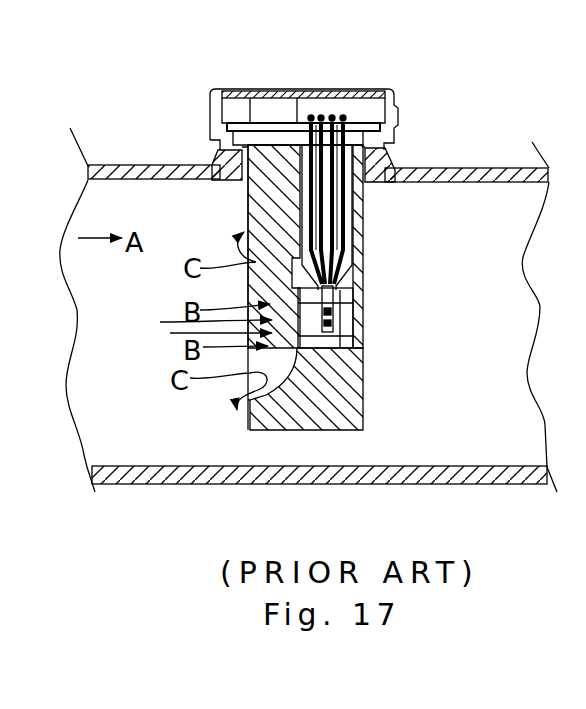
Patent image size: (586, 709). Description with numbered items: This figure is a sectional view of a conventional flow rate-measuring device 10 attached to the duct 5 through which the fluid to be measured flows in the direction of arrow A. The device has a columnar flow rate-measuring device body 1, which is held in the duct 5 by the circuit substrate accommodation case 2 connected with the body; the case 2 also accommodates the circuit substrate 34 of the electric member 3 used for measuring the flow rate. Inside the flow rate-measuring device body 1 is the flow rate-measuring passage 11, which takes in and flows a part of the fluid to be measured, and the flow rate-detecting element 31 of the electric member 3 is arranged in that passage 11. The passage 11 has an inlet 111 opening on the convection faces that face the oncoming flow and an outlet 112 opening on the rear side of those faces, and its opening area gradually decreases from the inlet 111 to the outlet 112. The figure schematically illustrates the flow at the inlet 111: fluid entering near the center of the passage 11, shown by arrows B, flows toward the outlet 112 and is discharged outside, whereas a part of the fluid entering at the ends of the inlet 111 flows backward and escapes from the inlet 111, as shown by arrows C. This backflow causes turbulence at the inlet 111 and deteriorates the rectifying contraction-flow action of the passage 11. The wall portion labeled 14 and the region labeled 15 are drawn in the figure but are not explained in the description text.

The flow rate-measuring device body 1 is at (304, 303).
The circuit substrate accommodation case 2 is at (373, 89).
The electric member 3 is at (250, 98).
The duct 5 is at (150, 484).
The flow rate-measuring device 10 is at (398, 108).
The flow rate-measuring passage 11 is at (200, 333).
The housing wall 14 is at (246, 202).
The outlet 15 is at (238, 425).
The flow rate-detecting element 31 is at (363, 293).
The circuit substrate 34 is at (298, 122).
The inlet 111 is at (200, 322).
The outlet 112 is at (363, 320).